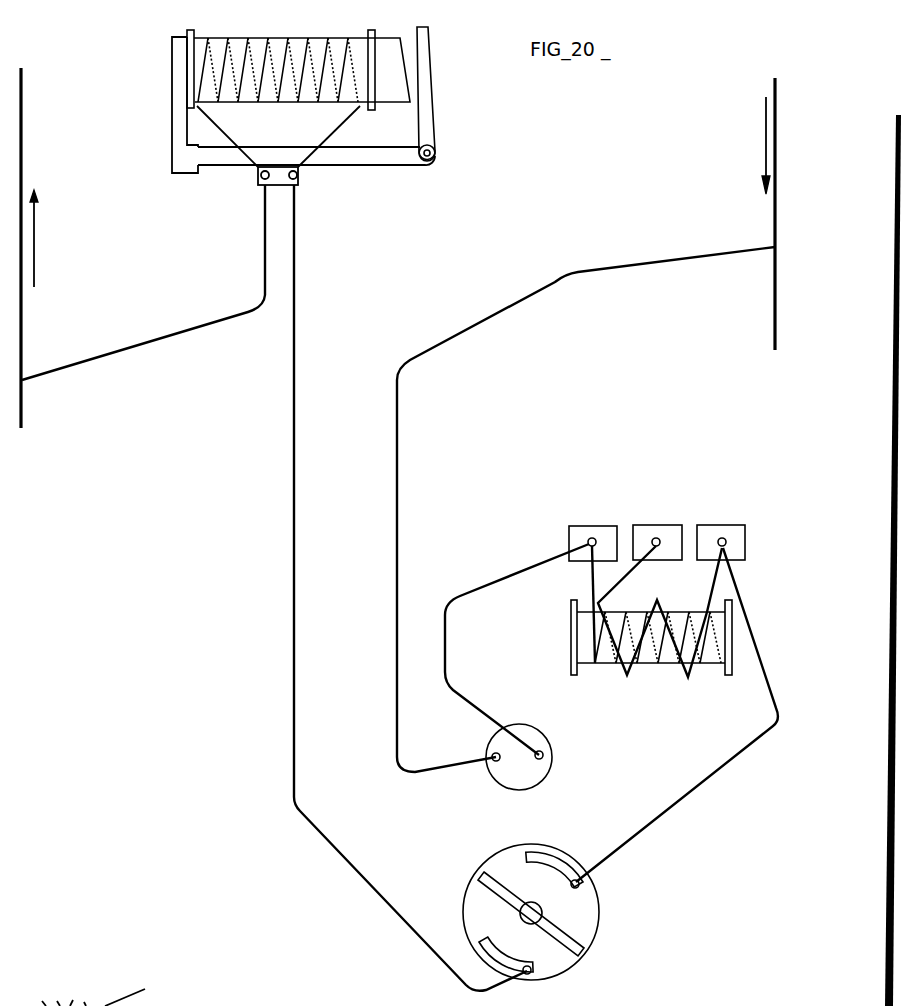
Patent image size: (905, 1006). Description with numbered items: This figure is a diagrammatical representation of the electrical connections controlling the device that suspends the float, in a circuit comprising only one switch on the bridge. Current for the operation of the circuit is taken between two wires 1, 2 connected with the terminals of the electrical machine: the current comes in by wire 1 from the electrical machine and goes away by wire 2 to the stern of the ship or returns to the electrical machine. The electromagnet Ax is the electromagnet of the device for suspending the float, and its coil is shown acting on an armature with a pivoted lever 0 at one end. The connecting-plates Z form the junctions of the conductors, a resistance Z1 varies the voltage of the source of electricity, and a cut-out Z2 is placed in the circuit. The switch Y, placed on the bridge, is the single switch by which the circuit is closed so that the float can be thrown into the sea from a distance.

The electromagnet Ax is at (298, 61).
The pivoted lever 0 is at (432, 94).
The wire 1 is at (777, 214).
The wire 2 is at (30, 248).
The connecting-plates Z is at (657, 534).
The resistance Z1 is at (651, 647).
The cut-out Z2 is at (532, 757).
The switch Y is at (550, 912).